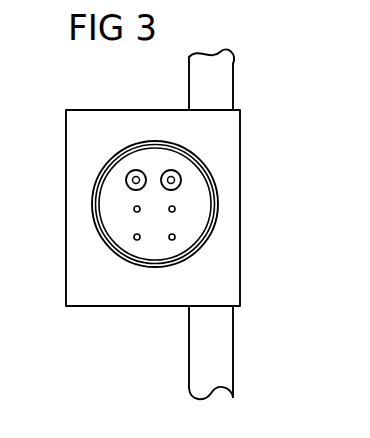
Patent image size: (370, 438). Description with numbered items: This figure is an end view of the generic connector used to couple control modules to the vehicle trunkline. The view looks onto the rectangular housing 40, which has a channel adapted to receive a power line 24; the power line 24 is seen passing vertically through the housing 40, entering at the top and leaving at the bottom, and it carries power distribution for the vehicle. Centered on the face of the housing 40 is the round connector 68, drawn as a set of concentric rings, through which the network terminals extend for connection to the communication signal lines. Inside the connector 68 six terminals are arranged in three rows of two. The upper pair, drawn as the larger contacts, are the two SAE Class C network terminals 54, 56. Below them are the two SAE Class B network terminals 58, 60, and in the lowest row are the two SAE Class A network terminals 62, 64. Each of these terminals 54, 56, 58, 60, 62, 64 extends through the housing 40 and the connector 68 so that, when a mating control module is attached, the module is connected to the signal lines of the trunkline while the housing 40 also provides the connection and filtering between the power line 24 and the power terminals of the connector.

The power line 24 is at (189, 355).
The housing 40 is at (113, 306).
The SAE Class C network terminal 54 is at (126, 178).
The SAE Class C network terminal 56 is at (171, 170).
The SAE Class B network terminal 58 is at (134, 209).
The SAE Class B network terminal 60 is at (175, 209).
The SAE Class A network terminal 62 is at (134, 237).
The SAE Class A network terminal 64 is at (175, 237).
The connector 68 is at (200, 158).